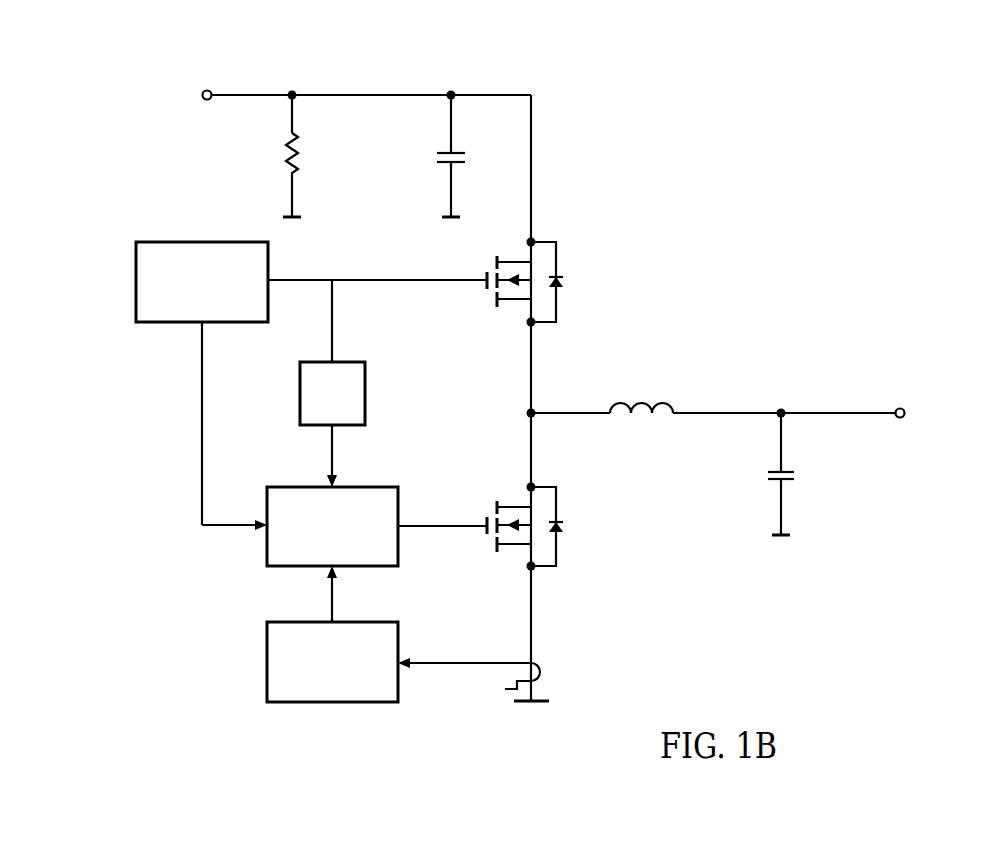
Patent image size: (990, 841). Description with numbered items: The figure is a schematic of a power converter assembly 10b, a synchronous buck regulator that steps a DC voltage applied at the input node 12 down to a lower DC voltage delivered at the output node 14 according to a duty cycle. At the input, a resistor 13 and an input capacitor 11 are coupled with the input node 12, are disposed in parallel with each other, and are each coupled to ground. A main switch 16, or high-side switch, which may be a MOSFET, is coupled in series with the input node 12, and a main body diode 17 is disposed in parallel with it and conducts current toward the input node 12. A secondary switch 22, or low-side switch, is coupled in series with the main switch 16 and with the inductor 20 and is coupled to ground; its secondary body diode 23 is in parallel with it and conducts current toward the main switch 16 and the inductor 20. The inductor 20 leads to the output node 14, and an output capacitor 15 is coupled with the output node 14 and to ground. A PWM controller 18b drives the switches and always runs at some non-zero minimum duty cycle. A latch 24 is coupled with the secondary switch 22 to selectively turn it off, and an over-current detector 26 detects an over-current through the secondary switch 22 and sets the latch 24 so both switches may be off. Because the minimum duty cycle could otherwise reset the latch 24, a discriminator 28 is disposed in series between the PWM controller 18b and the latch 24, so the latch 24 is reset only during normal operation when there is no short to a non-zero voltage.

The power converter assembly 10b is at (804, 99).
The input node 12 is at (205, 76).
The resistor 13 is at (273, 170).
The input capacitor 11 is at (427, 170).
The PWM controller 18b is at (136, 280).
The discriminator 28 is at (332, 393).
The main switch 16 is at (503, 334).
The main body diode 17 is at (593, 283).
The secondary switch 22 is at (503, 579).
The secondary body diode 23 is at (593, 528).
The latch 24 is at (267, 506).
The over-current detector 26 is at (267, 663).
The inductor 20 is at (645, 432).
The output capacitor 15 is at (754, 486).
The output node 14 is at (923, 396).